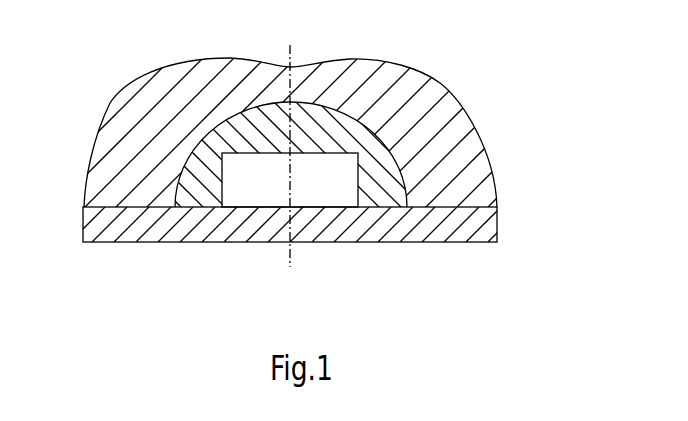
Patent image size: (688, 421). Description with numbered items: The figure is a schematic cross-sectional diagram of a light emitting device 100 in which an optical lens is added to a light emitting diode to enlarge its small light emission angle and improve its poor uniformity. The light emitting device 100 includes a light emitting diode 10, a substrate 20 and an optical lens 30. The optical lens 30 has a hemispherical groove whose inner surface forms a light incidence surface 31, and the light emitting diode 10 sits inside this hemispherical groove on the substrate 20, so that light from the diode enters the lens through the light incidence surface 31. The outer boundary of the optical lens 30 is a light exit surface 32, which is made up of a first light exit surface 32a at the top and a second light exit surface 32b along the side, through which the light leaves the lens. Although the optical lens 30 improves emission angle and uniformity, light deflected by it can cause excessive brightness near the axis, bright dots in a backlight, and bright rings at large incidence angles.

The light emitting device 100 is at (164, 27).
The light emitting diode 10 is at (257, 198).
The substrate 20 is at (397, 230).
The optical lens 30 is at (110, 105).
The light incidence surface 31 is at (180, 167).
The light exit surface 32 is at (401, 103).
The first light exit surface 32a is at (315, 60).
The second light exit surface 32b is at (461, 133).